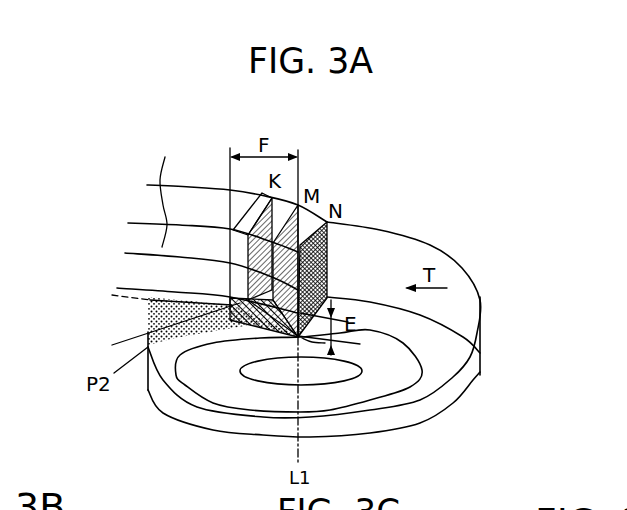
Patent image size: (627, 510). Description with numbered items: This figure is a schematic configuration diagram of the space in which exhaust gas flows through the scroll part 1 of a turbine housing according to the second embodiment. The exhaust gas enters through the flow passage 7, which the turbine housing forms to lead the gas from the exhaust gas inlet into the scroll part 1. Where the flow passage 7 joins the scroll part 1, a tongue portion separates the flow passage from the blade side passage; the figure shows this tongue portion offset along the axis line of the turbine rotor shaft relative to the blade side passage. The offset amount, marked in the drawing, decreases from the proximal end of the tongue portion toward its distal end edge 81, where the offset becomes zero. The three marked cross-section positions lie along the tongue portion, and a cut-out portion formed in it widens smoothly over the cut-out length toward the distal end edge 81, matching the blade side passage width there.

The scroll part 1 is at (431, 425).
The flow passage 7 is at (219, 239).
The distal end edge 81 is at (345, 342).